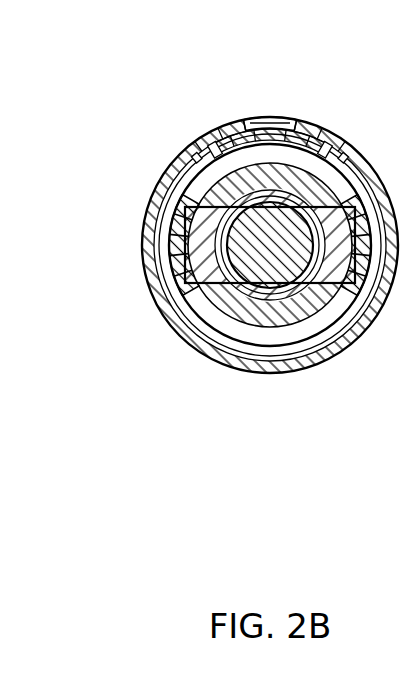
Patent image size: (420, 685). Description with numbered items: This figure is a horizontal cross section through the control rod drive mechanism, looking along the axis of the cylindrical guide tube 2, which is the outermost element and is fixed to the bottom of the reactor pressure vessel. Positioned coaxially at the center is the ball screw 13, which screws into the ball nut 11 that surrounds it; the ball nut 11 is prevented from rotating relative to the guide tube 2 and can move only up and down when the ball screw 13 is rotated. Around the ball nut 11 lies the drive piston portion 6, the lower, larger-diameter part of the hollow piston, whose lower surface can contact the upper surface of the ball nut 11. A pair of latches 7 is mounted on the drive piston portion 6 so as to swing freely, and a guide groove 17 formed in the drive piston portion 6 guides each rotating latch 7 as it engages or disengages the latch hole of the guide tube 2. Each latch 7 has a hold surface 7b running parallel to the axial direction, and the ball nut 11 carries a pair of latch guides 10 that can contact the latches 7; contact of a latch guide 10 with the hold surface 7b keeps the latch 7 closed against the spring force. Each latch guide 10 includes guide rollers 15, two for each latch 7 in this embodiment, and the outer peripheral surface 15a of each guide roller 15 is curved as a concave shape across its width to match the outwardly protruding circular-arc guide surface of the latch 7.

The guide tube 2 is at (327, 350).
The drive piston portion 6 is at (282, 172).
The latch 7 is at (208, 244).
The hold surface 7b is at (170, 230).
The latch guide 10 is at (160, 250).
The ball nut 11 is at (90, 308).
The ball screw 13 is at (270, 274).
The guide roller 15 is at (222, 88).
The outer peripheral surface 15a is at (193, 200).
The guide groove 17 is at (367, 158).